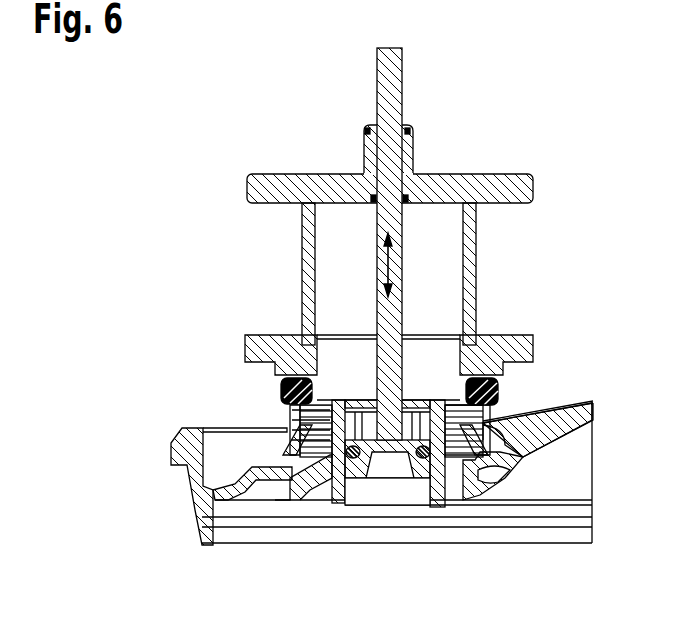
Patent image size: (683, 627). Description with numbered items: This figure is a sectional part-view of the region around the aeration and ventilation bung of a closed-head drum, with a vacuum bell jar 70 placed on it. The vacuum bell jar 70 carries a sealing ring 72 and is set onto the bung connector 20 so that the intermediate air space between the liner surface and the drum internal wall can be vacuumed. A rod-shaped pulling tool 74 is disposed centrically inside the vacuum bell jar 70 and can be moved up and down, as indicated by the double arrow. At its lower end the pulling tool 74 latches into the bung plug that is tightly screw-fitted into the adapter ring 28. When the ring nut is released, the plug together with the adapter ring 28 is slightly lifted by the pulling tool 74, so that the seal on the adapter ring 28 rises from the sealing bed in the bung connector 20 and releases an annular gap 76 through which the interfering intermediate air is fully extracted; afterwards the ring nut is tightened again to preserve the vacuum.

The bung connector 20 is at (285, 427).
The adapter ring 28 is at (336, 500).
The vacuum bell jar 70 is at (467, 278).
The sealing ring 72 is at (498, 395).
The pulling tool 74 is at (388, 101).
The annular gap 76 is at (291, 500).